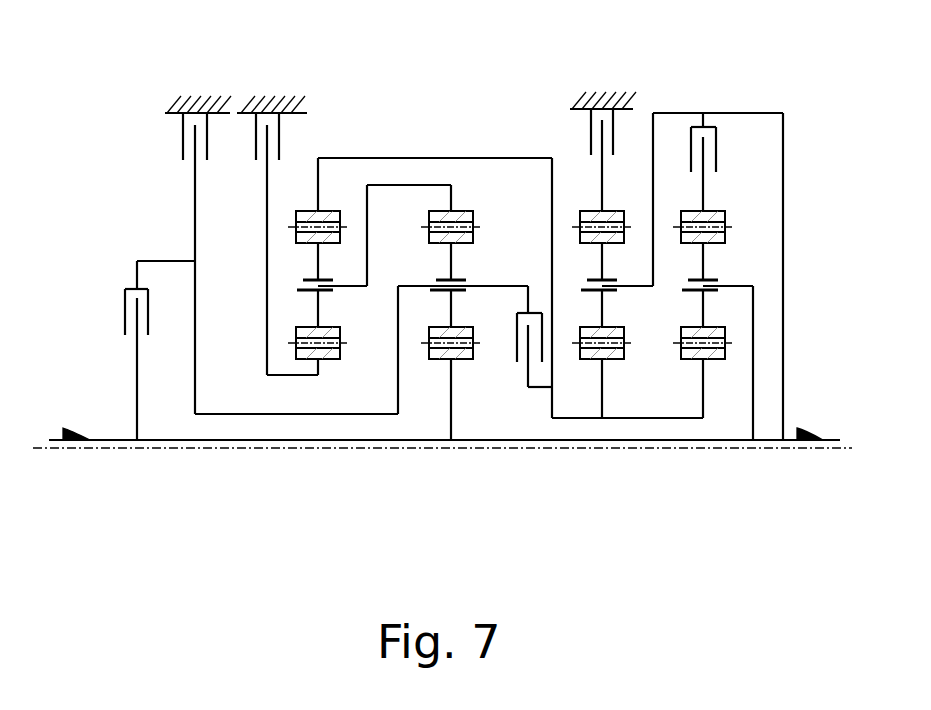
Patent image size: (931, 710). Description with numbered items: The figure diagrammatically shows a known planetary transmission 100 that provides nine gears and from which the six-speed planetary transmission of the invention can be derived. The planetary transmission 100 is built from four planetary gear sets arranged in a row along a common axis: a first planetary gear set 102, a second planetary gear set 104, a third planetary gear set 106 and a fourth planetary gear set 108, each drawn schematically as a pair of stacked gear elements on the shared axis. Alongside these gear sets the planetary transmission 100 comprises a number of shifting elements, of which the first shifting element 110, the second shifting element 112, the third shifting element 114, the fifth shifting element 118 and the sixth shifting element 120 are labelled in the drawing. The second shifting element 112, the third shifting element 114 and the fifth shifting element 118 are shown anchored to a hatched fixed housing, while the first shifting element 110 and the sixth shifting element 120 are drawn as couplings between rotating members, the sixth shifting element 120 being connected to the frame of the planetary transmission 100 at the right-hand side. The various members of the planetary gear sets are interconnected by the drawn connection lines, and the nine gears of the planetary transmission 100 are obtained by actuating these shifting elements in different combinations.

The planetary transmission 100 is at (795, 95).
The first planetary gear set 102 is at (319, 459).
The second planetary gear set 104 is at (450, 459).
The third planetary gear set 106 is at (603, 459).
The fourth planetary gear set 108 is at (707, 459).
The first shifting element 110 is at (118, 325).
The second shifting element 112 is at (175, 137).
The third shifting element 114 is at (288, 137).
The fifth shifting element 118 is at (580, 137).
The sixth shifting element 120 is at (720, 138).